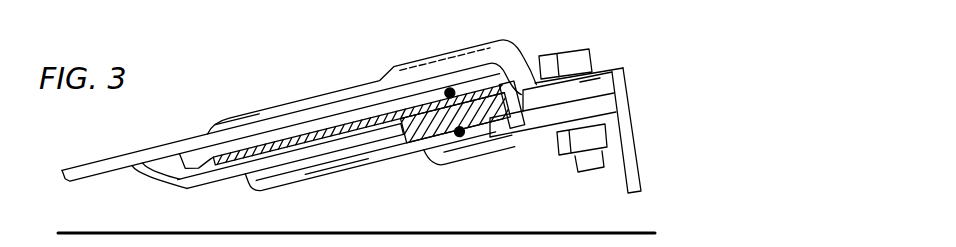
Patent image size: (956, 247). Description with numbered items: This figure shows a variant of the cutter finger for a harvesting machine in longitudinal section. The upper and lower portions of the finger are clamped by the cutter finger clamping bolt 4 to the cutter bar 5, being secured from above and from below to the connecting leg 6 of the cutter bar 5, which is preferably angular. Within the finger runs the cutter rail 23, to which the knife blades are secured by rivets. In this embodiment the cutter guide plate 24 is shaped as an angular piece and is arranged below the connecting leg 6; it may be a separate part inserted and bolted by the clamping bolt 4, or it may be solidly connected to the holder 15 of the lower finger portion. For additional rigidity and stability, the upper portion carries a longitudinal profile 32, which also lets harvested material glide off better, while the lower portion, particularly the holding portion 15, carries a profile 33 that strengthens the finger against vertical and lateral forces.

The cutter finger clamping bolt 4 is at (589, 50).
The cutter bar 5 is at (630, 96).
The leg of cutter bar 6 is at (620, 72).
The holder 15 is at (437, 152).
The cutter rail 23 is at (478, 118).
The cutter guide plate 24 is at (513, 107).
The profile 32 is at (370, 84).
The profile 33 is at (357, 168).